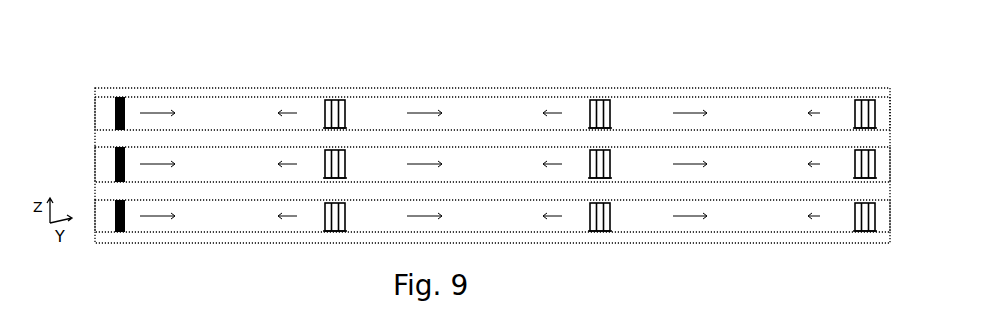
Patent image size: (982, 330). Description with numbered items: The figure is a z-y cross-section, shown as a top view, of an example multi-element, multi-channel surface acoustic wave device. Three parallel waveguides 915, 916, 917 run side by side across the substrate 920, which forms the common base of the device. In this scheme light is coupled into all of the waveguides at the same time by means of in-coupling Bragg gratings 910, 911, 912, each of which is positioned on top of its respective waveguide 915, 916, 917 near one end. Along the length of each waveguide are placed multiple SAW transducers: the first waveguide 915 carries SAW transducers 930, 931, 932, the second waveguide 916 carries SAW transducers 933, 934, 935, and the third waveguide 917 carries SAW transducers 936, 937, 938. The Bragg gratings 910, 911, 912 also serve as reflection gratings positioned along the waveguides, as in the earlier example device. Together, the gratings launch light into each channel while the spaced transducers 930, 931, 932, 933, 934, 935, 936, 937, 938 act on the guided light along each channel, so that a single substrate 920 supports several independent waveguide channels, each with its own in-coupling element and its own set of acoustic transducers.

The in-coupling Bragg grating 910 is at (116, 100).
The in-coupling Bragg grating 911 is at (125, 172).
The in-coupling Bragg grating 912 is at (120, 230).
The waveguide 915 is at (105, 113).
The waveguide 916 is at (108, 163).
The waveguide 917 is at (98, 220).
The substrate 920 is at (100, 90).
The SAW transducer 930 is at (330, 100).
The SAW transducer 931 is at (600, 102).
The SAW transducer 932 is at (888, 53).
The SAW transducer 933 is at (343, 163).
The SAW transducer 934 is at (610, 162).
The SAW transducer 935 is at (873, 163).
The SAW transducer 936 is at (322, 215).
The SAW transducer 937 is at (588, 215).
The SAW transducer 938 is at (853, 217).